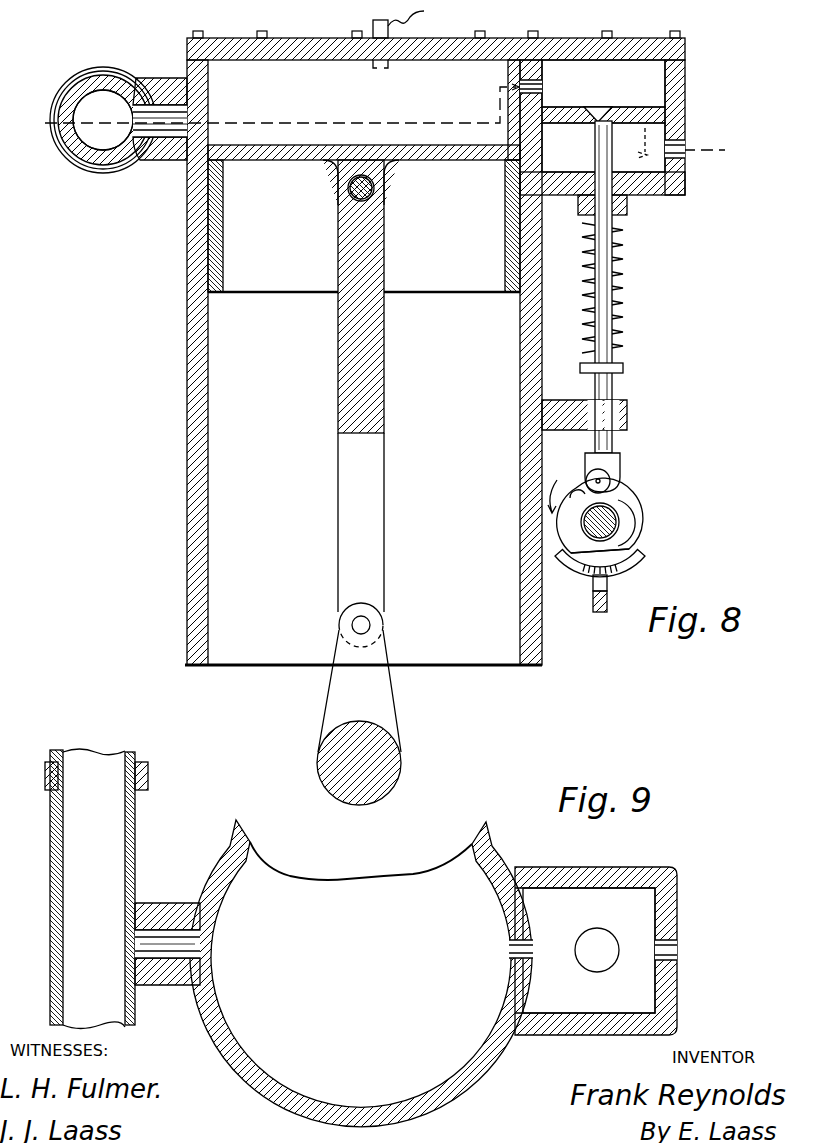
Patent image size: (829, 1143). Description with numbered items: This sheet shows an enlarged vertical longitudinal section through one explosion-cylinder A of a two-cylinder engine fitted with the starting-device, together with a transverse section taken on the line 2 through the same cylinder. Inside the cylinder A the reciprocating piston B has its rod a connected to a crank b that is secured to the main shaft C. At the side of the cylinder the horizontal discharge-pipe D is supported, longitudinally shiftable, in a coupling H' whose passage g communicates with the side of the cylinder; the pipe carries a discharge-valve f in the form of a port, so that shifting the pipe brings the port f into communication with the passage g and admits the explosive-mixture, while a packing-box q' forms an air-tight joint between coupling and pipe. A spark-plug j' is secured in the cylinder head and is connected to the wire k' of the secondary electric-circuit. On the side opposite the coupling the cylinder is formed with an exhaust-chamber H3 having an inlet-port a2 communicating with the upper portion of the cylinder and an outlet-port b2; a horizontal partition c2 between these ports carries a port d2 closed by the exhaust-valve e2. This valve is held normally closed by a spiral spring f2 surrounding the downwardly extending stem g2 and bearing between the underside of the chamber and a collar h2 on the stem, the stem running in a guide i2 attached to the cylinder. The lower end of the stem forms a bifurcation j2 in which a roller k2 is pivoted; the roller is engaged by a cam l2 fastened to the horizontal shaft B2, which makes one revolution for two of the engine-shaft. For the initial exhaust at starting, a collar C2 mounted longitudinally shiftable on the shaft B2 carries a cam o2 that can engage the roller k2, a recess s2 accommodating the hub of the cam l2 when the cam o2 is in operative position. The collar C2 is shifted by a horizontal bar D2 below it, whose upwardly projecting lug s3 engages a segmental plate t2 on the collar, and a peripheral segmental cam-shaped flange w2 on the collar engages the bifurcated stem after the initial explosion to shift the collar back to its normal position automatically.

In FIG. 8, the explosion-cylinder A is at (344, 362).
In FIG. 9, the explosion-cylinder A is at (361, 973).
In FIG. 8, the piston B is at (418, 232).
In FIG. 8, the piston rod a is at (386, 360).
In FIG. 8, the crank b is at (340, 705).
In FIG. 8, the main shaft C is at (402, 760).
In FIG. 8, the feed-pipe D is at (78, 158).
In FIG. 9, the feed-pipe D is at (94, 889).
In FIG. 8, the pipe coupling sleeve H' is at (122, 147).
In FIG. 9, the pipe coupling sleeve H' is at (71, 887).
In FIG. 8, the packing-box q' is at (94, 120).
In FIG. 9, the packing-box q' is at (112, 776).
In FIG. 8, the discharge-valve f is at (133, 126).
In FIG. 9, the discharge-valve f is at (128, 987).
In FIG. 8, the passage g is at (165, 124).
In FIG. 9, the passage g is at (160, 950).
In FIG. 8, the section line 2 is at (45, 123).
In FIG. 8, the spark-plug j' is at (360, 39).
In FIG. 8, the wire k' is at (415, 22).
In FIG. 8, the valve housing H3 is at (686, 87).
In FIG. 9, the valve housing H3 is at (680, 926).
In FIG. 8, the inlet-port a2 is at (543, 80).
In FIG. 9, the inlet-port a2 is at (531, 952).
In FIG. 8, the outlet-port b2 is at (686, 160).
In FIG. 9, the outlet-port b2 is at (680, 958).
In FIG. 8, the horizontal partition c2 is at (632, 112).
In FIG. 9, the horizontal partition c2 is at (589, 950).
In FIG. 8, the port d2 is at (603, 147).
In FIG. 8, the exhaust-valve e2 is at (588, 86).
In FIG. 9, the exhaust-valve e2 is at (597, 950).
In FIG. 8, the spiral spring f2 is at (624, 262).
In FIG. 8, the valve-stem g2 is at (603, 290).
In FIG. 8, the collar h2 is at (623, 369).
In FIG. 8, the guide i2 is at (628, 412).
In FIG. 8, the bifurcation j2 is at (610, 483).
In FIG. 8, the roller k2 is at (618, 494).
In FIG. 8, the segmental cam-shaped flange w2 is at (583, 493).
In FIG. 8, the horizontal shaft B2 is at (612, 526).
In FIG. 8, the collar C2 is at (628, 546).
In FIG. 8, the cam o2 is at (638, 517).
In FIG. 8, the recess s2 is at (638, 522).
In FIG. 8, the cam l2 is at (568, 540).
In FIG. 8, the segmental plate t2 is at (618, 570).
In FIG. 8, the lug s3 is at (595, 591).
In FIG. 8, the horizontal bar D2 is at (600, 614).